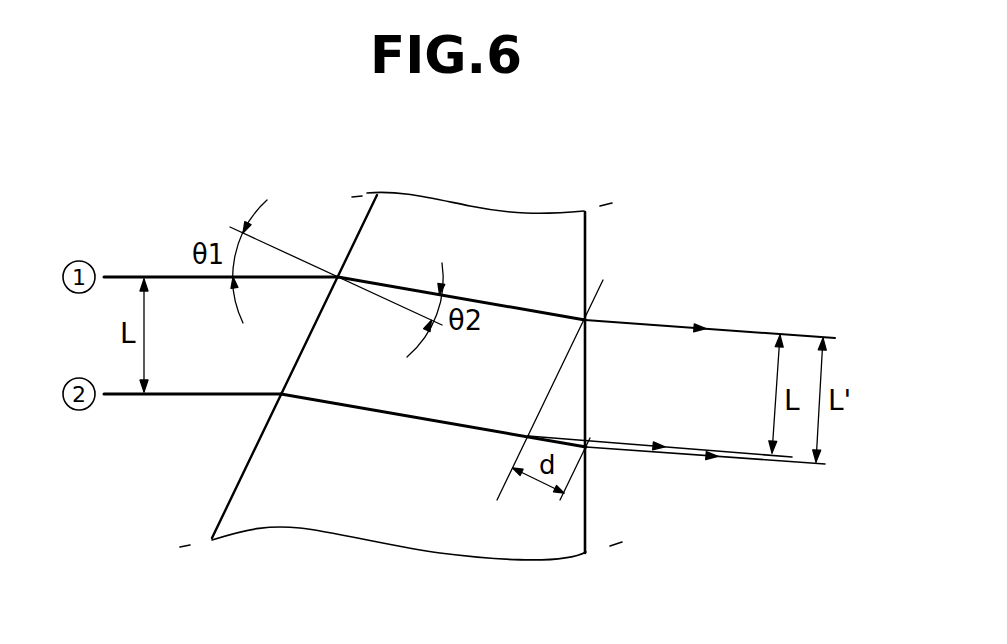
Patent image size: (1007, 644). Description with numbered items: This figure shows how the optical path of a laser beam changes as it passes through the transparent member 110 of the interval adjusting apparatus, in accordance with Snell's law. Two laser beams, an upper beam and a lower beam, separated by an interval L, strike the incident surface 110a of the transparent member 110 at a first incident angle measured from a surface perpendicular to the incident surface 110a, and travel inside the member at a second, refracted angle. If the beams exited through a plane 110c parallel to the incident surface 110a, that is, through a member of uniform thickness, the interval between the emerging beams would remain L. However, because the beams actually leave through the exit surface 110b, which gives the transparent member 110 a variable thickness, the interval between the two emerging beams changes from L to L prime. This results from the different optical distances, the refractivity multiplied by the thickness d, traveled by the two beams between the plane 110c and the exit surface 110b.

The transparent member 110 is at (586, 238).
The incident surface 110a is at (248, 461).
The exit surface 110b is at (587, 507).
The plane parallel to the incident surface 110c is at (497, 480).